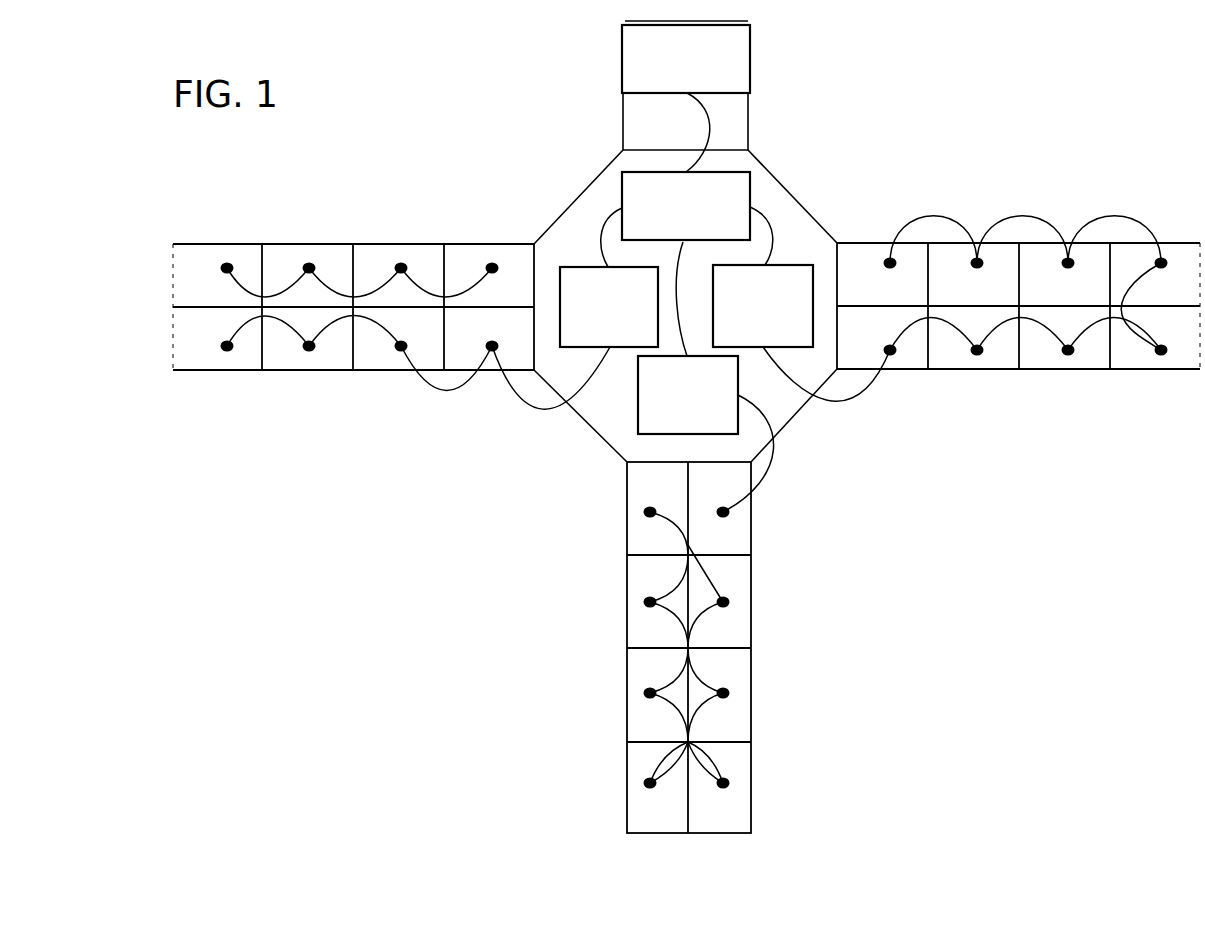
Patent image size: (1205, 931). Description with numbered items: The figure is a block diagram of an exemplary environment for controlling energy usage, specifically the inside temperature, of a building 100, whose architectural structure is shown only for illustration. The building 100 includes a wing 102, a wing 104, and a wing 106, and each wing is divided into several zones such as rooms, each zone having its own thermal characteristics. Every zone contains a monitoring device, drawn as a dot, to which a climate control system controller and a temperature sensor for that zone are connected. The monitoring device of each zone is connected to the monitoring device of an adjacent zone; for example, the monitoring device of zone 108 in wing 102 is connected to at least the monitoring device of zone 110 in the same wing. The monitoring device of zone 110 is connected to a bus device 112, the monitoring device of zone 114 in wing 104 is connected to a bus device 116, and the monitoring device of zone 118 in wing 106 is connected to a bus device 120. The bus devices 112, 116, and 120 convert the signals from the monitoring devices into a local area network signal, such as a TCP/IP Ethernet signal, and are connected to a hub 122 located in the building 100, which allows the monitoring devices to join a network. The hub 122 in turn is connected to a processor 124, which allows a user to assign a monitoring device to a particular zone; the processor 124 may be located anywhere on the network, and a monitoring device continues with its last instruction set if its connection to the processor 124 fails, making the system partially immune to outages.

The building 100 is at (350, 666).
The wing 102 is at (353, 337).
The wing 104 is at (613, 647).
The wing 106 is at (1018, 329).
The zone 108 is at (398, 330).
The zone 110 is at (486, 330).
The bus device 112 is at (575, 338).
The zone 114 is at (715, 492).
The bus device 116 is at (706, 434).
The zone 118 is at (887, 335).
The bus device 120 is at (801, 333).
The hub 122 is at (687, 264).
The processor 124 is at (686, 96).